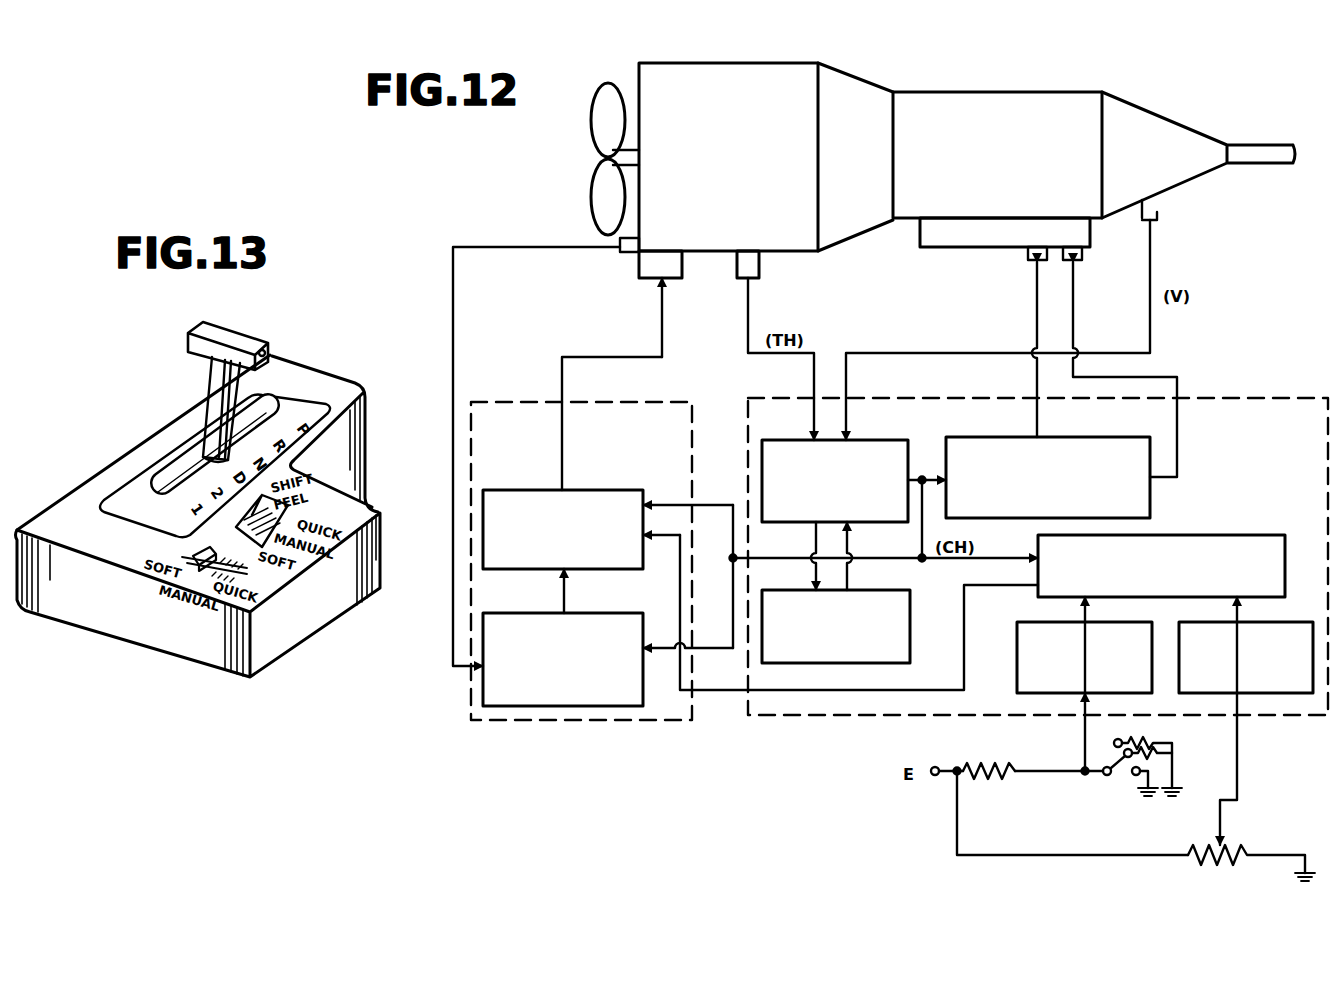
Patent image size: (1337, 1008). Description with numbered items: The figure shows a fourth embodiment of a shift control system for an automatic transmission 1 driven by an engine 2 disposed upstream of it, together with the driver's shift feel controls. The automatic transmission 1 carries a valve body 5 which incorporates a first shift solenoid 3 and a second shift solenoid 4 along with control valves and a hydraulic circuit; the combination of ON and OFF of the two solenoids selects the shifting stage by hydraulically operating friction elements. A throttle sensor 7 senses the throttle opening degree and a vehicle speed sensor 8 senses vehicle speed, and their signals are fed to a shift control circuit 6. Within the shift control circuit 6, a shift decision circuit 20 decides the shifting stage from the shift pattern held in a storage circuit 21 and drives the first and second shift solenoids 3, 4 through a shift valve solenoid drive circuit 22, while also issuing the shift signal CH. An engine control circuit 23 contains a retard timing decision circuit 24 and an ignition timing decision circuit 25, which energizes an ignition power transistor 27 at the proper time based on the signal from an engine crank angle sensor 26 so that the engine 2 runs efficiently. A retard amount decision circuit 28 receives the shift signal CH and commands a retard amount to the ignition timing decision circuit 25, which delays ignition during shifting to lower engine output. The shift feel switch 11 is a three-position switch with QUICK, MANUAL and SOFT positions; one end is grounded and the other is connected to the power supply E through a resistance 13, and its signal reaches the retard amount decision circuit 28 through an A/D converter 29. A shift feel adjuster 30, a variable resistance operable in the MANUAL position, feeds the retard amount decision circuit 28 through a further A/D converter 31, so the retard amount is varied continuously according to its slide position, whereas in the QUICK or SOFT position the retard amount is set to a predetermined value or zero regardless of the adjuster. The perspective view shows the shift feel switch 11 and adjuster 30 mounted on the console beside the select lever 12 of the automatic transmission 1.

In FIG. 12, the automatic transmission 1 is at (961, 92).
In FIG. 12, the engine 2 is at (736, 63).
In FIG. 12, the first shift solenoid 3 is at (1028, 256).
In FIG. 12, the second shift solenoid 4 is at (1083, 254).
In FIG. 12, the valve body 5 is at (1090, 235).
In FIG. 12, the shift control circuit 6 is at (1238, 395).
In FIG. 12, the throttle sensor 7 is at (760, 262).
In FIG. 12, the vehicle speed sensor 8 is at (1158, 205).
In FIG. 12, the shift feel switch 11 is at (1120, 775).
In FIG. 13, the shift feel switch 11 is at (288, 512).
In FIG. 13, the select lever 12 is at (258, 338).
In FIG. 12, the resistance 13 is at (985, 765).
In FIG. 12, the shift decision circuit 20 is at (885, 440).
In FIG. 12, the storage circuit 21 is at (912, 610).
In FIG. 12, the shift valve solenoid drive circuit 22 is at (1106, 437).
In FIG. 12, the engine control circuit 23 is at (527, 720).
In FIG. 12, the retard timing decision circuit 24 is at (507, 613).
In FIG. 12, the ignition timing decision circuit 25 is at (508, 490).
In FIG. 12, the engine crank angle sensor 26 is at (618, 240).
In FIG. 12, the ignition power transistor 27 is at (639, 265).
In FIG. 12, the retard amount decision circuit 28 is at (1237, 535).
In FIG. 12, the A/D converter 29 is at (1017, 640).
In FIG. 12, the shift feel adjuster 30 is at (1243, 846).
In FIG. 13, the shift feel adjuster 30 is at (200, 550).
In FIG. 12, the A/D converter 31 is at (1290, 622).